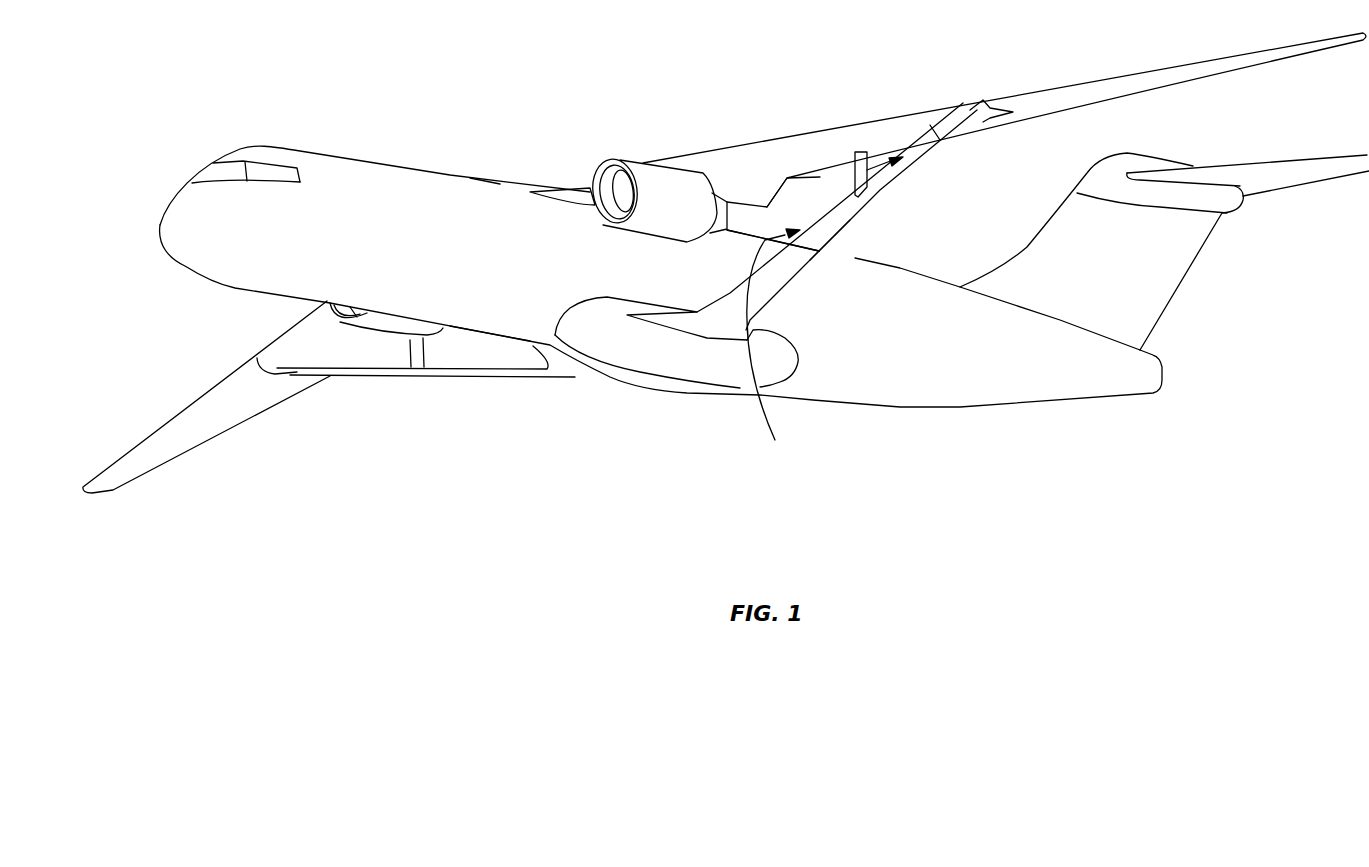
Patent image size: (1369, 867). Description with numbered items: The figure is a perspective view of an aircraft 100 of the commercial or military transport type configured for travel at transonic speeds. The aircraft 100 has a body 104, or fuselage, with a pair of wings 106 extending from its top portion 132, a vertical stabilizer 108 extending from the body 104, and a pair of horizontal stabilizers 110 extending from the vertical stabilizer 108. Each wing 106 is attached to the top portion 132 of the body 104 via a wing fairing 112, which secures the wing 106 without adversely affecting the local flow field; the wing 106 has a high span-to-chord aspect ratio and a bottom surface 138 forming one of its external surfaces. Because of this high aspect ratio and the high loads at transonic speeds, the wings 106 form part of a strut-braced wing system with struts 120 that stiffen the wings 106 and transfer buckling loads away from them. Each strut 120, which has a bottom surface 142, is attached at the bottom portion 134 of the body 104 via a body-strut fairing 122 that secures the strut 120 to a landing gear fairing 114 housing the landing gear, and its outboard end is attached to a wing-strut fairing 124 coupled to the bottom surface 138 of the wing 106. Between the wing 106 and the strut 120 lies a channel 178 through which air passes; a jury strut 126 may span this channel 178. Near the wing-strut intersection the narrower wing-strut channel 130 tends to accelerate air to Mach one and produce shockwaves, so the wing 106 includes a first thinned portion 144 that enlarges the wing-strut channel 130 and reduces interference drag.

The aircraft 100 is at (336, 122).
The body 104 is at (450, 173).
The wings 106 is at (864, 118).
The vertical stabilizer 108 is at (1153, 277).
The horizontal stabilizers 110 is at (1213, 183).
The wing fairing 112 is at (590, 193).
The landing gear fairing 114 is at (610, 333).
The struts 120 is at (935, 168).
The body-strut fairing 122 is at (690, 330).
The wing-strut fairing 124 is at (1000, 97).
The jury strut 126 is at (855, 182).
The wing-strut channel 130 is at (862, 187).
The top portion 132 is at (497, 183).
The bottom portion 134 is at (510, 300).
The bottom surface 138 is at (817, 150).
The bottom surface 142 is at (827, 233).
The first thinned portion 144 is at (930, 125).
The channel 178 is at (775, 440).